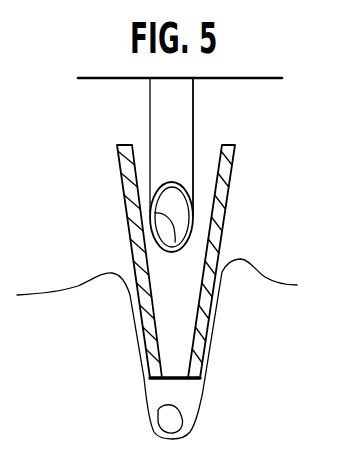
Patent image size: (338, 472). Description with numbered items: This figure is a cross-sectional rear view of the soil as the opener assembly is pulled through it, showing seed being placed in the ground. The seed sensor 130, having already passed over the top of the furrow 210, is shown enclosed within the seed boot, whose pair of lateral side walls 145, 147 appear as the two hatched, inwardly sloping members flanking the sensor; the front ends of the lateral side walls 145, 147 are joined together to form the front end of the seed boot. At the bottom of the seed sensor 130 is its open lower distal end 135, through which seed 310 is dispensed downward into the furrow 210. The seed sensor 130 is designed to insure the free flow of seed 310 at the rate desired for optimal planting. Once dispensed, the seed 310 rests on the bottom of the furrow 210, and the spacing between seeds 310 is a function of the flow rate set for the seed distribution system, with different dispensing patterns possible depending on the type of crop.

The seed sensor 130 is at (205, 121).
The open lower distal end 135 is at (178, 178).
The lateral side wall 145 is at (226, 217).
The lateral side wall 147 is at (124, 201).
The furrow 210 is at (193, 395).
The seed 310 is at (172, 419).